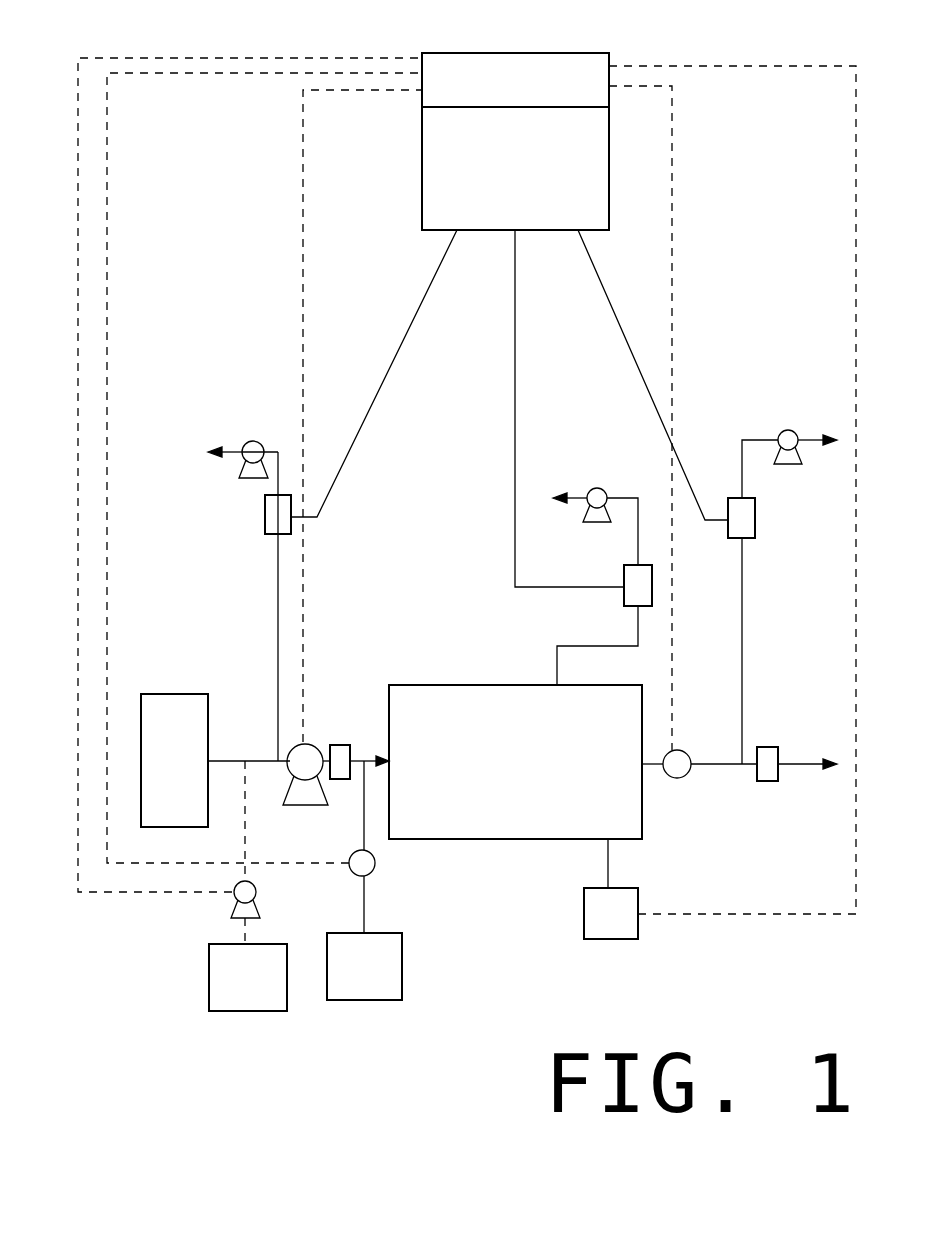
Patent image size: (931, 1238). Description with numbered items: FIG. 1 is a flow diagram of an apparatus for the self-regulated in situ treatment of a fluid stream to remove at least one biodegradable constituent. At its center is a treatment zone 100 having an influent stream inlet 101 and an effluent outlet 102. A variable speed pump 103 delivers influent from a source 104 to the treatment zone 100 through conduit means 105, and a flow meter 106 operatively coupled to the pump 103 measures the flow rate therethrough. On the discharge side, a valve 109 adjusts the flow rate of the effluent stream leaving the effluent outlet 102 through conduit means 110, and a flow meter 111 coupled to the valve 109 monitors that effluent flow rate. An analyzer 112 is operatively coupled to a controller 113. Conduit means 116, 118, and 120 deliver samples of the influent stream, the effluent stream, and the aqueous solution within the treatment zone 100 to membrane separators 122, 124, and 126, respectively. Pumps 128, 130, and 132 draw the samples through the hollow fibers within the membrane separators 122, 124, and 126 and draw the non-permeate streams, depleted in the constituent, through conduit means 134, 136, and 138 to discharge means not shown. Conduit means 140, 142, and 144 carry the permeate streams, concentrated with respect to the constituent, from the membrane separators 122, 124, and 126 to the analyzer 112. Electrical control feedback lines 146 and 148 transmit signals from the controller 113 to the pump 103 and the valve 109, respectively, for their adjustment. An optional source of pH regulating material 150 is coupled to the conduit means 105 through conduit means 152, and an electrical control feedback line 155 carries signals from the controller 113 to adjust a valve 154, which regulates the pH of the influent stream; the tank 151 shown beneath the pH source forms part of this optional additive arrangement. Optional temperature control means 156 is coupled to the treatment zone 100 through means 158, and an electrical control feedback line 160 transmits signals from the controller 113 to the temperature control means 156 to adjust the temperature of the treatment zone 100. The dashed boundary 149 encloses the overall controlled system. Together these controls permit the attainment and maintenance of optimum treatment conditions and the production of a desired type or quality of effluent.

The treatment zone 100 is at (472, 685).
The influent stream inlet 101 is at (375, 760).
The effluent outlet 102 is at (645, 770).
The variable speed pump 103 is at (295, 787).
The source 104 is at (185, 700).
The conduit means 105 is at (232, 760).
The flow meter 106 is at (335, 745).
The valve 109 is at (688, 777).
The conduit means 110 is at (732, 760).
The flow meter 111 is at (768, 747).
The analyzer 112 is at (422, 190).
The controller 113 is at (472, 53).
The conduit means 116 is at (278, 598).
The conduit means 118 is at (742, 578).
The conduit means 120 is at (603, 645).
The membrane separator 122 is at (268, 523).
The membrane separator 124 is at (757, 518).
The membrane separator 126 is at (624, 580).
The pump 128 is at (255, 442).
The pump 130 is at (787, 432).
The pump 132 is at (594, 488).
The conduit means 134 is at (275, 448).
The conduit means 136 is at (760, 440).
The conduit means 138 is at (638, 515).
The conduit means 140 is at (417, 318).
The conduit means 142 is at (625, 338).
The conduit means 144 is at (515, 458).
The electrical control feedback line 146 is at (303, 268).
The electrical control feedback line 148 is at (672, 200).
The overall system boundary 149 is at (78, 253).
The source of pH regulating material 150 is at (257, 896).
The chemical additive tank 151 is at (222, 960).
The conduit means 152 is at (366, 925).
The valve 154 is at (375, 863).
The electrical control feedback line 155 is at (107, 240).
The temperature control means 156 is at (638, 940).
The means 158 is at (610, 862).
The electrical control feedback line 160 is at (856, 222).